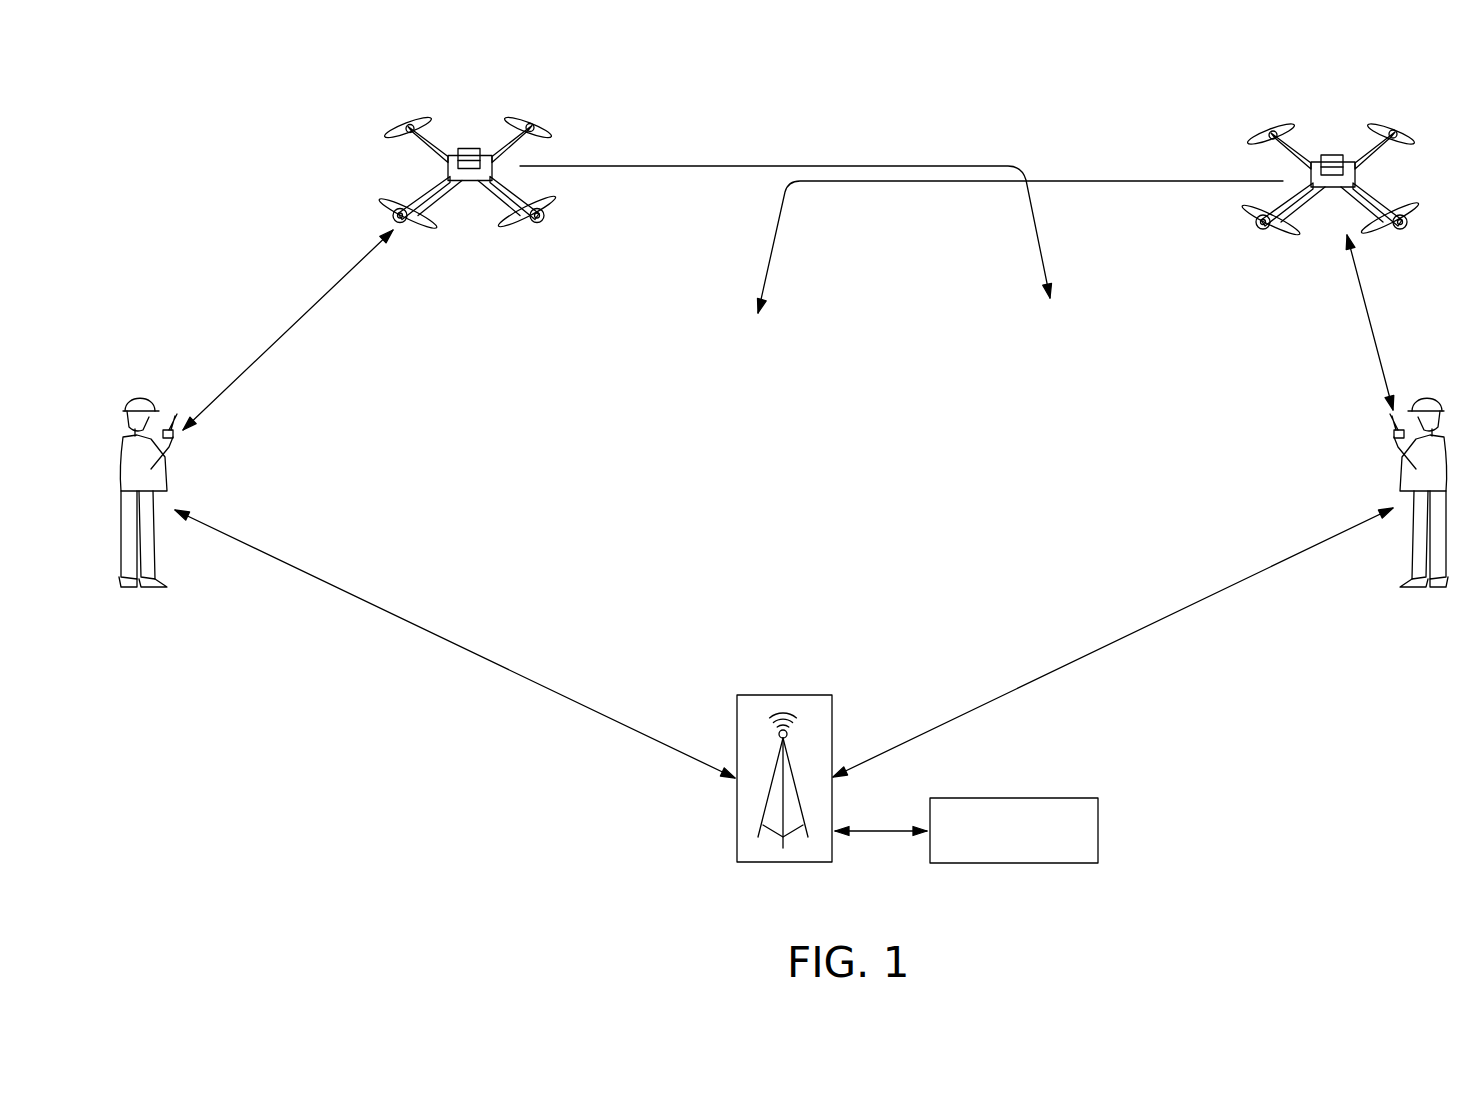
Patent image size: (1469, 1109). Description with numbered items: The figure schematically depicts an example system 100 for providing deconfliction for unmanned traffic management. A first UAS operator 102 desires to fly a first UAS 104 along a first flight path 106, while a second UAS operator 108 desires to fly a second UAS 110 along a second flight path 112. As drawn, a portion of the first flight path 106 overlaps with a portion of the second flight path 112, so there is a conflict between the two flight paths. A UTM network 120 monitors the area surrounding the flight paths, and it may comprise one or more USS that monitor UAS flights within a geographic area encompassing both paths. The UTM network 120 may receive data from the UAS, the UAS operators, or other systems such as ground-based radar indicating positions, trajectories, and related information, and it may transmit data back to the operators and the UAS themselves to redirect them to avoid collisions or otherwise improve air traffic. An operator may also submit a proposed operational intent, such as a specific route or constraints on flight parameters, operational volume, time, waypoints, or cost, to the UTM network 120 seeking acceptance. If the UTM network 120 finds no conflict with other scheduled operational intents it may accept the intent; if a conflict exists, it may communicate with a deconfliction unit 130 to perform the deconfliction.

The system 100 is at (283, 160).
The first UAS operator 102 is at (133, 395).
The first UAS 104 is at (465, 148).
The first flight path 106 is at (662, 160).
The second UAS operator 108 is at (1435, 395).
The second UAS 110 is at (1333, 155).
The second flight path 112 is at (1105, 181).
The UTM network 120 is at (783, 695).
The deconfliction unit 130 is at (1098, 830).